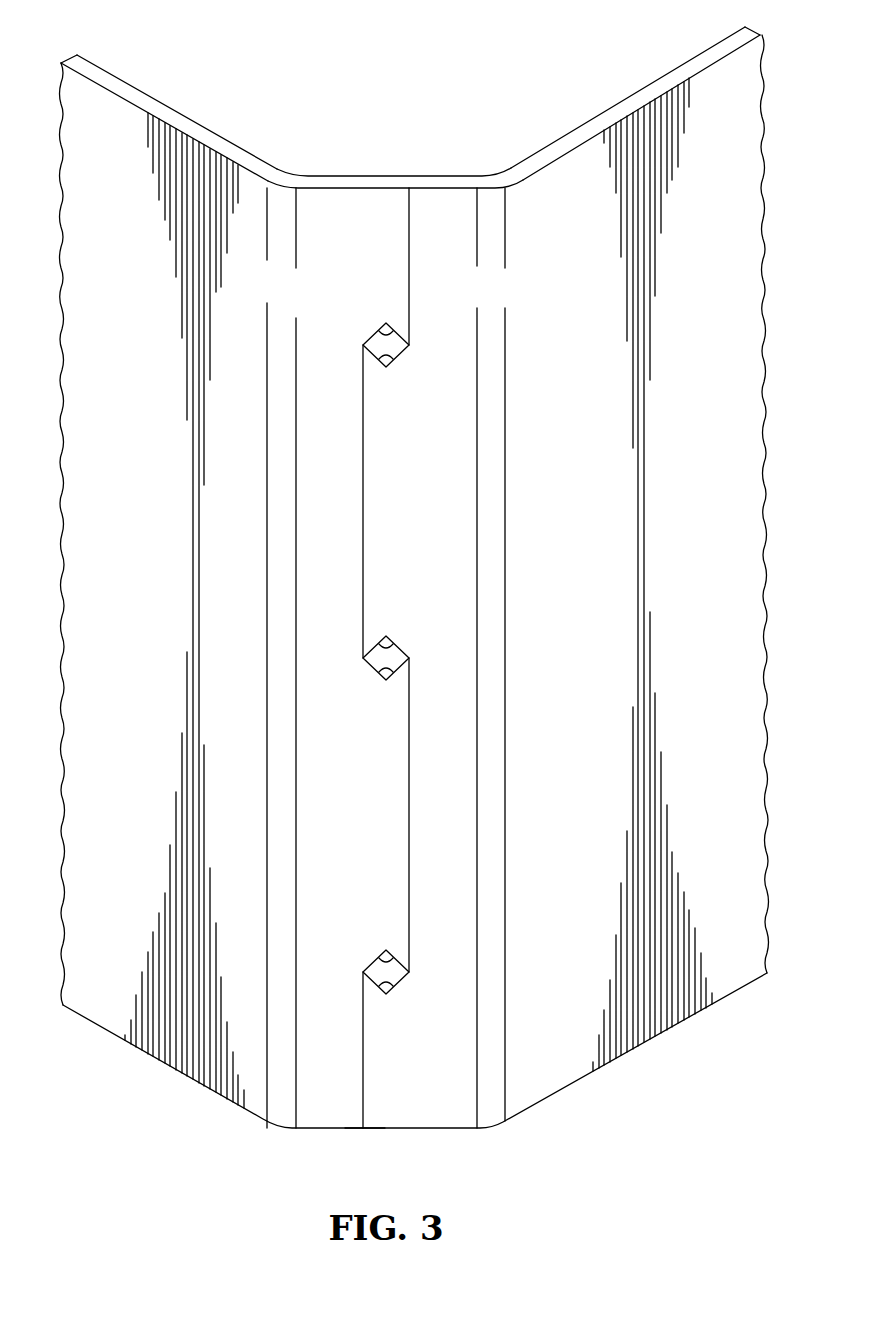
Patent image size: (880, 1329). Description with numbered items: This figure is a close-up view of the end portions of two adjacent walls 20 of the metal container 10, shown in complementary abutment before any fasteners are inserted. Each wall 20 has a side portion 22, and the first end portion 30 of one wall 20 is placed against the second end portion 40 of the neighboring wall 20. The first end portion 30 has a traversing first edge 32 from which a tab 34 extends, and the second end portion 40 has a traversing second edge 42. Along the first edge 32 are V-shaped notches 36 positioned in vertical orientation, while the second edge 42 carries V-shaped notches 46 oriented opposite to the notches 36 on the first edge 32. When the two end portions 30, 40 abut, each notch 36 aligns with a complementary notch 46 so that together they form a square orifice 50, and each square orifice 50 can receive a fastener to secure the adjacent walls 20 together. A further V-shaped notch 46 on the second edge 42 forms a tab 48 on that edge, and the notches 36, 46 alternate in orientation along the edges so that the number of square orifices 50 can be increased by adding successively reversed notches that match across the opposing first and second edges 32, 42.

The metal container 10 is at (460, 42).
The wall 20 is at (93, 1025).
The side portion 22 is at (155, 110).
The first end portion 30 is at (445, 181).
The first edge 32 is at (365, 1130).
The tab 34 is at (368, 472).
The V-shaped notch 36 is at (390, 368).
The second end portion 40 is at (342, 181).
The second edge 42 is at (361, 1130).
The V-shaped notch 46 is at (381, 324).
The tab 48 is at (402, 830).
The square orifice 50 is at (372, 338).